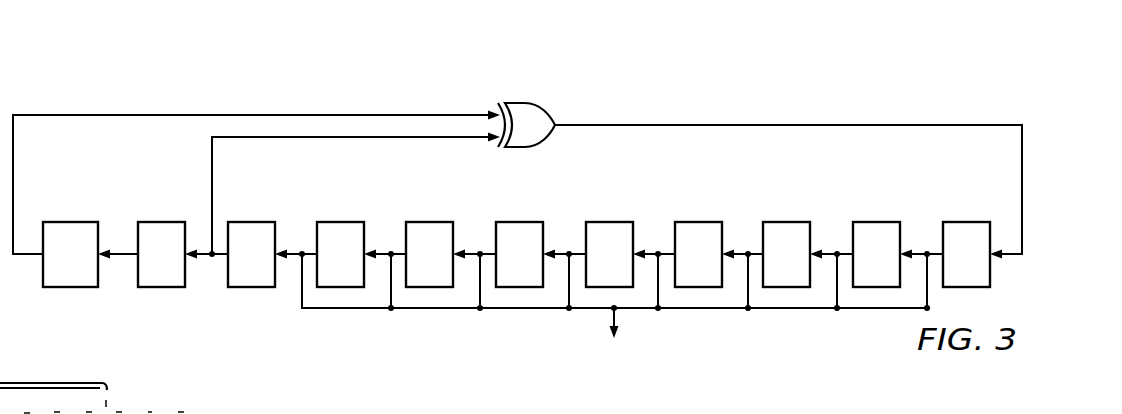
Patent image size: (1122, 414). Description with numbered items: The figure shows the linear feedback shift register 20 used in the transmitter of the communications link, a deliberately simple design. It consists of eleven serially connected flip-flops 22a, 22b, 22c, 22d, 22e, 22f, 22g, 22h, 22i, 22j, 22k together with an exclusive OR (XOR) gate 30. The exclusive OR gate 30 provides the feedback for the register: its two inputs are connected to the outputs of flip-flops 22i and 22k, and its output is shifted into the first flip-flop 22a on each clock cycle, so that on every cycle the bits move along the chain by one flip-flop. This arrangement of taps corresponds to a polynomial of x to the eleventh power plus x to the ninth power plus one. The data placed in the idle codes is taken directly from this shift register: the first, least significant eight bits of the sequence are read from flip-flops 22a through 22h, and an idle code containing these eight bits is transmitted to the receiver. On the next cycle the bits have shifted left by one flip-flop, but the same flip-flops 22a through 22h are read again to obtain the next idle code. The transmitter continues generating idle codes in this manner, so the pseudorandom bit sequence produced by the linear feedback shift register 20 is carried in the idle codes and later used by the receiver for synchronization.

The linear feedback shift register 20 is at (1060, 169).
The first flip-flop 22a is at (967, 222).
The flip-flop 22b is at (877, 222).
The flip-flop 22c is at (787, 222).
The flip-flop 22d is at (699, 222).
The flip-flop 22e is at (610, 222).
The flip-flop 22f is at (520, 222).
The flip-flop 22g is at (430, 222).
The flip-flop 22h is at (341, 222).
The flip-flop 22i is at (252, 222).
The flip-flop 22j is at (161, 222).
The flip-flop 22k is at (70, 222).
The exclusive OR gate 30 is at (515, 103).